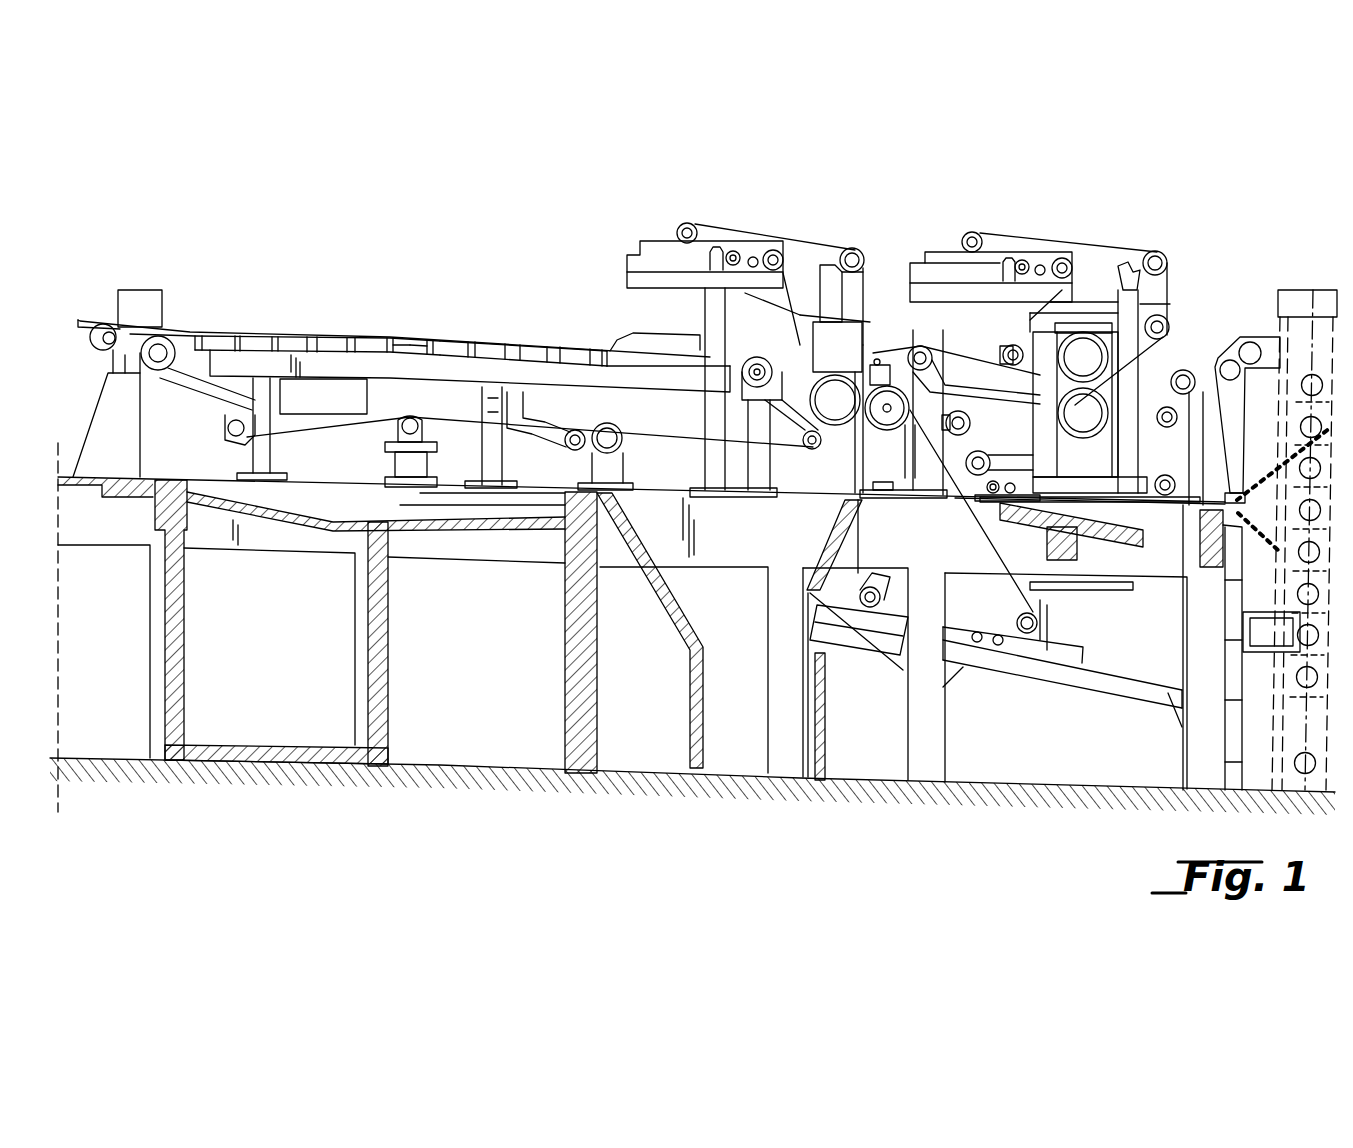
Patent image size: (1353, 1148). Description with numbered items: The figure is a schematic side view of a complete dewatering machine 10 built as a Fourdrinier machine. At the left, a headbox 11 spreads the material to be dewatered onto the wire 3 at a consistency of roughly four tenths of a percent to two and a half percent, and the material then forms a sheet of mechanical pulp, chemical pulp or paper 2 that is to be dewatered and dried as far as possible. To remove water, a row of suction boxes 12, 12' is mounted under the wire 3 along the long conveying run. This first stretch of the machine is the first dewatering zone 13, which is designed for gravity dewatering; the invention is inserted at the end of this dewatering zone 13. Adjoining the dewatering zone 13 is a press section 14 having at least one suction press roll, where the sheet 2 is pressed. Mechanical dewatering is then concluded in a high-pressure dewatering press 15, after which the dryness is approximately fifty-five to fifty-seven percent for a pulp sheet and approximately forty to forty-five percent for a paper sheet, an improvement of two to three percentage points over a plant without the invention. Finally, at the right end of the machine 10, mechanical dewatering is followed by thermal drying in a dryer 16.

The dewatering machine 10 is at (777, 163).
The headbox 11 is at (106, 322).
The suction box 12 is at (290, 305).
The suction box 12' is at (523, 311).
The sheet of mechanical pulp, chemical pulp or paper 2 is at (390, 340).
The wire 3 is at (392, 339).
The first dewatering zone 13 is at (433, 200).
The press section 14 is at (852, 214).
The high-pressure dewatering press 15 is at (1102, 165).
The dryer 16 is at (1303, 228).